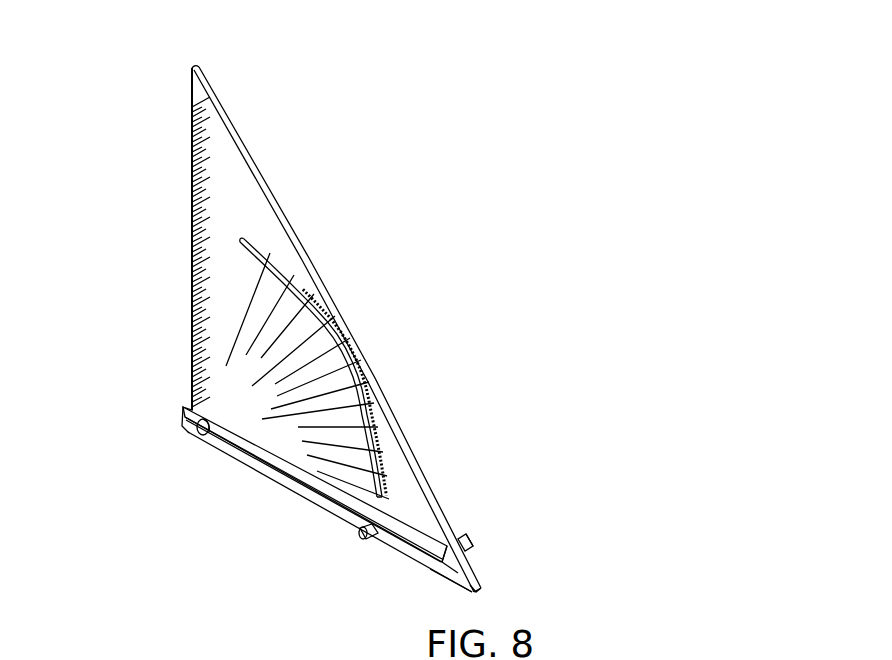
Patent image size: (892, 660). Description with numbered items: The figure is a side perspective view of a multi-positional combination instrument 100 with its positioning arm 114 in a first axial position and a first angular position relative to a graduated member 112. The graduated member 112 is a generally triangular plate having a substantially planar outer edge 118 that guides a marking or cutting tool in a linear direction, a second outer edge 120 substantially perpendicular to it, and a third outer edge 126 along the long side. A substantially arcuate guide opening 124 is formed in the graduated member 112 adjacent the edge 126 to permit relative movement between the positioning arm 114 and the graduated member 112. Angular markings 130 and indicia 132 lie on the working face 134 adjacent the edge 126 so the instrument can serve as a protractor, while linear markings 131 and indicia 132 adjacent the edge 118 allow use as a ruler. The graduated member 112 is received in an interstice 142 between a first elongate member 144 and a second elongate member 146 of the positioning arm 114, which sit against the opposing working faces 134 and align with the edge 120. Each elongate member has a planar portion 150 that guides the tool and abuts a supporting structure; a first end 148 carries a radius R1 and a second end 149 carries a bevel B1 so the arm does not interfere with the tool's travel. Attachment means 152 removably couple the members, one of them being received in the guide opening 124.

The multi-positional combination instrument 100 is at (106, 62).
The graduated member 112 is at (183, 134).
The positioning arm 114 is at (288, 500).
The outer edge 118 is at (192, 171).
The second outer edge 120 is at (478, 597).
The guide opening 124 is at (280, 222).
The outer edge 126 is at (302, 260).
The angular markings 130 is at (318, 356).
The linear markings 131 is at (192, 206).
The indicia 132 is at (204, 235).
The working face 134 is at (398, 424).
The interstice 142 is at (465, 552).
The first elongate member 144 is at (438, 567).
The second elongate member 146 is at (463, 536).
The first end 148 is at (190, 430).
The second end 149 is at (444, 566).
The planar portion 150 is at (337, 489).
The attachment means 152 is at (204, 436).
The bevel B1 is at (480, 582).
The radius R1 is at (192, 394).